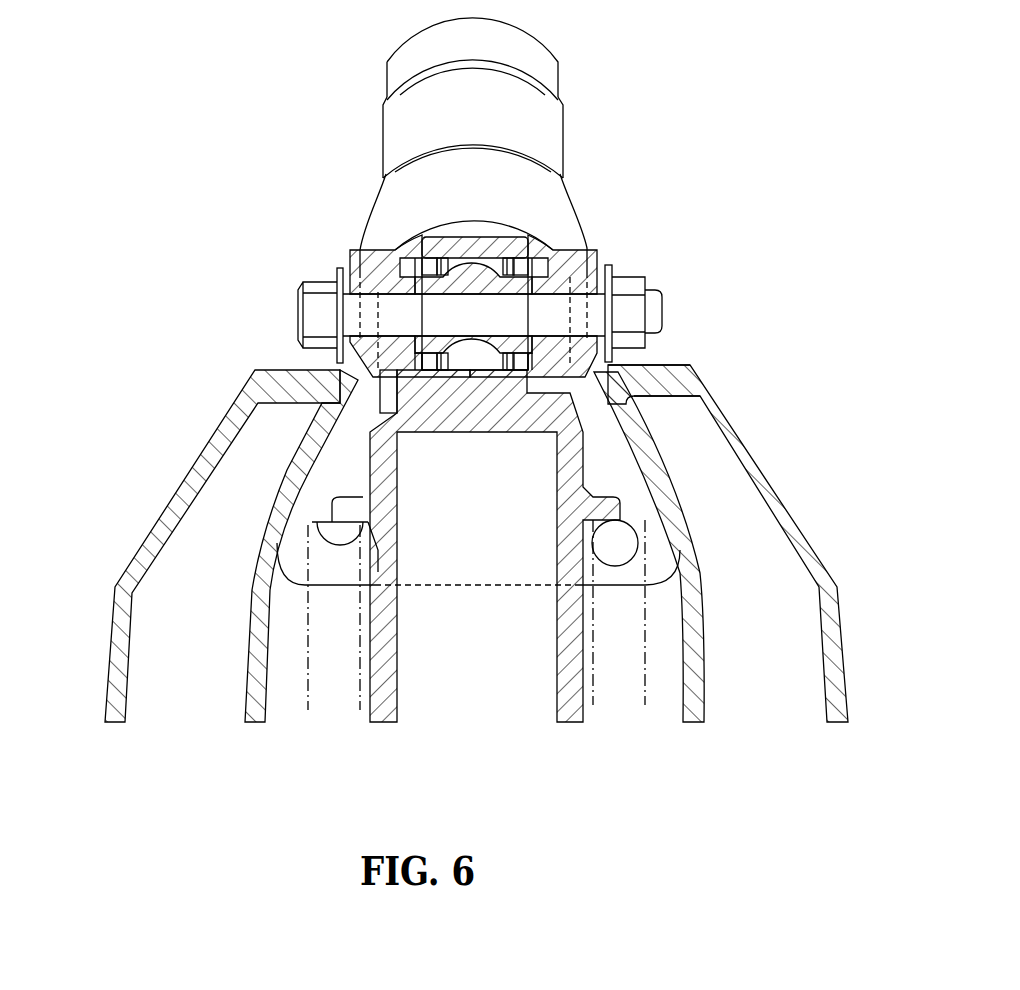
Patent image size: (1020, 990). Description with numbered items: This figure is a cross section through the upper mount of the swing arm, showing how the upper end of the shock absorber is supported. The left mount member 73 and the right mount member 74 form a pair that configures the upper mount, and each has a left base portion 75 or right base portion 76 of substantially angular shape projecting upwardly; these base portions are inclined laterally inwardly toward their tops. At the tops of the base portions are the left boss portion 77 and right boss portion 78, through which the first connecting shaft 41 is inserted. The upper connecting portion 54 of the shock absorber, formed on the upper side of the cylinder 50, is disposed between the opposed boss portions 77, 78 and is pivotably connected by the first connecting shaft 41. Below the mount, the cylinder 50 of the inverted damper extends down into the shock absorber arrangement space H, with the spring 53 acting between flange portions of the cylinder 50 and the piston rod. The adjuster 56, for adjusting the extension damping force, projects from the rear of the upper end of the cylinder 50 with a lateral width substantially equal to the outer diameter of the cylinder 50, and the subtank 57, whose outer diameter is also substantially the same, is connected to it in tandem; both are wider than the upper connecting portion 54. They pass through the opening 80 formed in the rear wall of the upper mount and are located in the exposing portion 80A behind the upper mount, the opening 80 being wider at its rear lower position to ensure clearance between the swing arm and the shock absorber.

The subtank 57 is at (565, 126).
The first connecting shaft 41 is at (410, 305).
The right boss portion 78 is at (352, 243).
The left boss portion 77 is at (590, 244).
The upper connecting portion 54 is at (507, 237).
The exposing portion 80A is at (347, 467).
The right base portion 76 is at (174, 480).
The right mount member 74 is at (184, 546).
The adjuster 56 is at (628, 396).
The left base portion 75 is at (730, 418).
The opening 80 is at (632, 456).
The left mount member 73 is at (764, 543).
The shock absorber arrangement space H is at (667, 600).
The spring 53 is at (645, 617).
The cylinder 50 is at (578, 655).